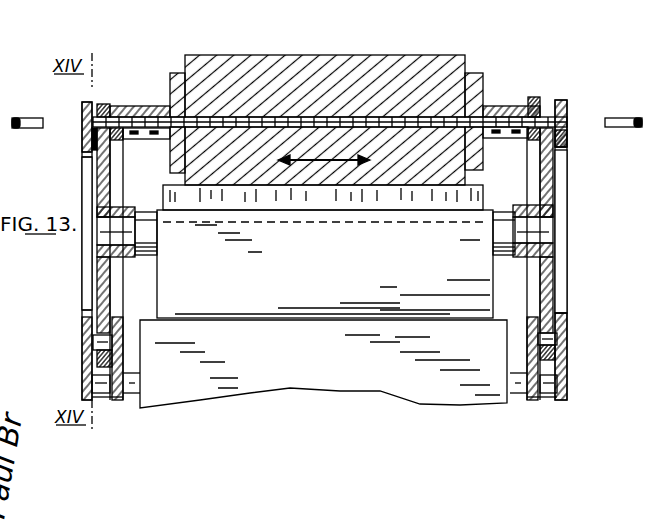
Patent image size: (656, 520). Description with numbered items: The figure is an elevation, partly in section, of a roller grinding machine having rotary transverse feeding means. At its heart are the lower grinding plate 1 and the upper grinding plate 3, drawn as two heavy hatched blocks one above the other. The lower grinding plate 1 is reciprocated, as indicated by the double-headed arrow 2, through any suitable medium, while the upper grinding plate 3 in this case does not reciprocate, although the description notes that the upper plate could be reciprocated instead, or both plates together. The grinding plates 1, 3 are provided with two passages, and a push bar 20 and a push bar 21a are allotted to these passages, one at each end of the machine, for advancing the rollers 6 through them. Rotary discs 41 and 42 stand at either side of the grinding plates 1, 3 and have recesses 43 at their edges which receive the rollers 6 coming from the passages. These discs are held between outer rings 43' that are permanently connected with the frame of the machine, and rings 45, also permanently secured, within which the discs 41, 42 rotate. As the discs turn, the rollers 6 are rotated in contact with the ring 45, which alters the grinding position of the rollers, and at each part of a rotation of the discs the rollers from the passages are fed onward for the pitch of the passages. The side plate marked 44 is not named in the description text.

The lower grinding plate 1 is at (455, 175).
The arrow 2 is at (327, 164).
The upper grinding plate 3 is at (453, 60).
The rollers 6 is at (448, 120).
The push bar 20 is at (620, 118).
The push bar 21a is at (20, 122).
The rotary disc 41 is at (549, 190).
The rotary disc 42 is at (131, 253).
The recesses 43 is at (326, 144).
The outer rings 43' is at (334, 114).
The left side plate 44 is at (84, 168).
The rings 45 is at (103, 104).